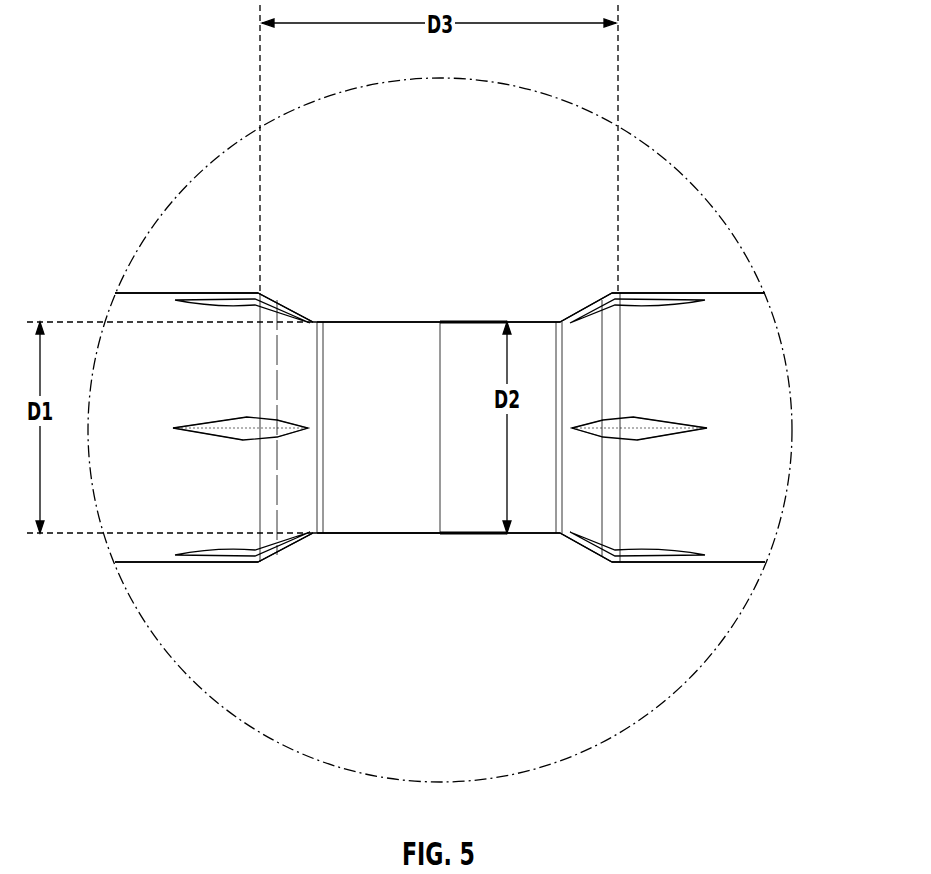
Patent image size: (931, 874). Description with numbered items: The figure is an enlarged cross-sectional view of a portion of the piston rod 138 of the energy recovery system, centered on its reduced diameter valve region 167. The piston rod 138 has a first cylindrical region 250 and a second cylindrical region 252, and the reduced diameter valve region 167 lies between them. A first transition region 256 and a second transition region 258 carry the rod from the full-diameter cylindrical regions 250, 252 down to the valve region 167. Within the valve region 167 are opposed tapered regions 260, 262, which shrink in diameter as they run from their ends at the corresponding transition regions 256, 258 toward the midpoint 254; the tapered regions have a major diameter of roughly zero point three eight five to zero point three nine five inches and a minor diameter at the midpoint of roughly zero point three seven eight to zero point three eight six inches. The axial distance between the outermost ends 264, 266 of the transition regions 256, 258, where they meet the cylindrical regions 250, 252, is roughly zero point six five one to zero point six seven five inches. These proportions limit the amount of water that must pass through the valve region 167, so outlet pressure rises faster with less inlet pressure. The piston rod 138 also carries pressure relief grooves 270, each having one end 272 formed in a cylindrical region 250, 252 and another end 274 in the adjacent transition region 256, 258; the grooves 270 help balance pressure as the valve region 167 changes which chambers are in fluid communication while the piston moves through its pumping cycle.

The piston rod 138 is at (107, 473).
The reduced diameter valve region 167 is at (397, 518).
The first cylindrical region 250 is at (133, 502).
The second cylindrical region 252 is at (700, 528).
The midpoint 254 is at (440, 373).
The first transition region 256 is at (297, 307).
The second transition region 258 is at (578, 307).
The tapered region 260 is at (355, 493).
The tapered region 262 is at (480, 518).
The outermost end 264 is at (258, 293).
The outermost end 266 is at (620, 293).
The pressure relief groove 270 is at (635, 440).
The groove end 272 is at (703, 427).
The groove end 274 is at (570, 433).